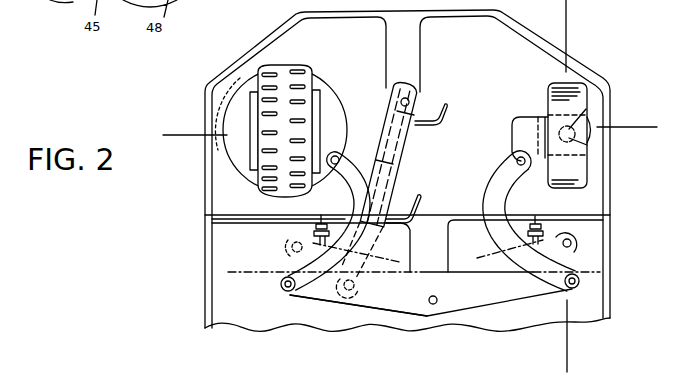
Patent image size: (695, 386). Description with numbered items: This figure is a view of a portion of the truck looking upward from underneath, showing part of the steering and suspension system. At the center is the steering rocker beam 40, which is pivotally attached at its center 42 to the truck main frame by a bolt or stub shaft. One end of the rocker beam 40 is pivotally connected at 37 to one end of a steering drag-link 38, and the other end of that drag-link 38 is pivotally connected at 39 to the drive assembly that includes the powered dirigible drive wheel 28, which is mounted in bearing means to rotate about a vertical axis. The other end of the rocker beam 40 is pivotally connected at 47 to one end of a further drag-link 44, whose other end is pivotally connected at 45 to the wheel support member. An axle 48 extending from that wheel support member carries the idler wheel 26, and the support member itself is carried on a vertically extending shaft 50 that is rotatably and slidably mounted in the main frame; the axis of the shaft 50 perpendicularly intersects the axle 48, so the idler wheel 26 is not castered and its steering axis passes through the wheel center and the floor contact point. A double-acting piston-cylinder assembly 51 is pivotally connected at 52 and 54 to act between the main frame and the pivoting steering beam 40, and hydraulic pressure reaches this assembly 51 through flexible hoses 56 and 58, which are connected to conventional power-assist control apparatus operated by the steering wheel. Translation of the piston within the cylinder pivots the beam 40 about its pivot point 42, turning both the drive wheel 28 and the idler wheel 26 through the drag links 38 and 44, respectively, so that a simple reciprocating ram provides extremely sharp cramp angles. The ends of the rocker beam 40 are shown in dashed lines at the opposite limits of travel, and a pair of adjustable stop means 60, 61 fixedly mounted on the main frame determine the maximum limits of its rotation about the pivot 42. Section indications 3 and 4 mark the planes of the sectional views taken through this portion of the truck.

The section line 3- 3 is at (643, 126).
The section line 4- 4 is at (567, 352).
The idler wheel 26 is at (561, 88).
The dirigible drive wheel 28 is at (285, 64).
The pivotal connection 37 is at (285, 291).
The steering drag-link 38 is at (324, 222).
The pivotal connection 39 is at (343, 157).
The steering rocker beam 40 is at (399, 298).
The pivot point 42 is at (413, 310).
The drag-link 44 is at (494, 180).
The pivotal connection 45 is at (513, 154).
The pivotal connection 47 is at (579, 287).
The axle 48 is at (579, 138).
The vertically extending shaft 50 is at (586, 109).
The double-acting piston-cylinder assembly 51 is at (399, 175).
The pivotal connection 52 is at (398, 92).
The pivotal connection 54 is at (349, 294).
The flexible hose 56 is at (441, 121).
The flexible hose 58 is at (422, 198).
The adjustable stop means 60 is at (314, 228).
The adjustable stop means 61 is at (546, 233).